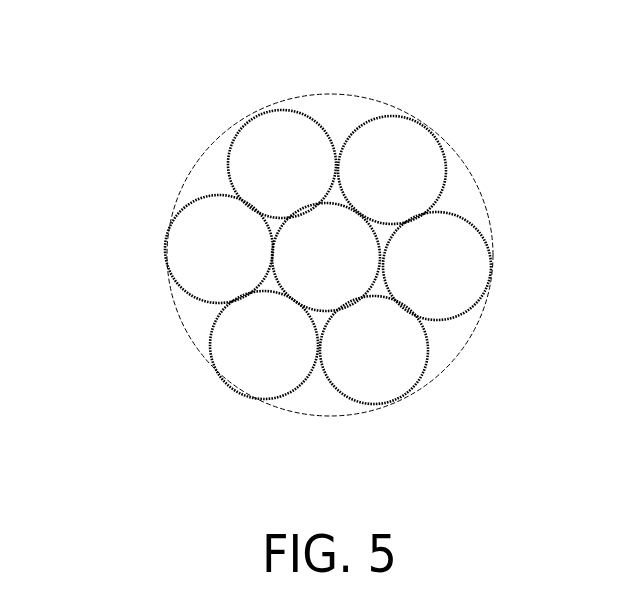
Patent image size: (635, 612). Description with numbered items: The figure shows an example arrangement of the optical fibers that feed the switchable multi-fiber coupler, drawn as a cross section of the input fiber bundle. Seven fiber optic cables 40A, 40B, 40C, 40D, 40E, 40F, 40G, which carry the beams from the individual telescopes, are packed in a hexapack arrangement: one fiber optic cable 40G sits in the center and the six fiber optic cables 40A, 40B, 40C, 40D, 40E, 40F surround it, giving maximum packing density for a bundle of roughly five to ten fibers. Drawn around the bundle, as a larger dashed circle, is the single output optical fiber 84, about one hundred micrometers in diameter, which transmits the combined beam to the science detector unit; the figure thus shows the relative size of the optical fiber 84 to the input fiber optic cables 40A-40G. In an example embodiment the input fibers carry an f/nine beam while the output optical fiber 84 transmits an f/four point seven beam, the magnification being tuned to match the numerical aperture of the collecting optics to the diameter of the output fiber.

The optical fiber 84 is at (472, 172).
The fiber optic cable 40A is at (398, 116).
The fiber optic cable 40B is at (492, 232).
The fiber optic cable 40C is at (428, 355).
The fiber optic cable 40D is at (212, 338).
The fiber optic cable 40E is at (192, 202).
The fiber optic cable 40F is at (280, 110).
The fiber optic cable 40G is at (382, 285).